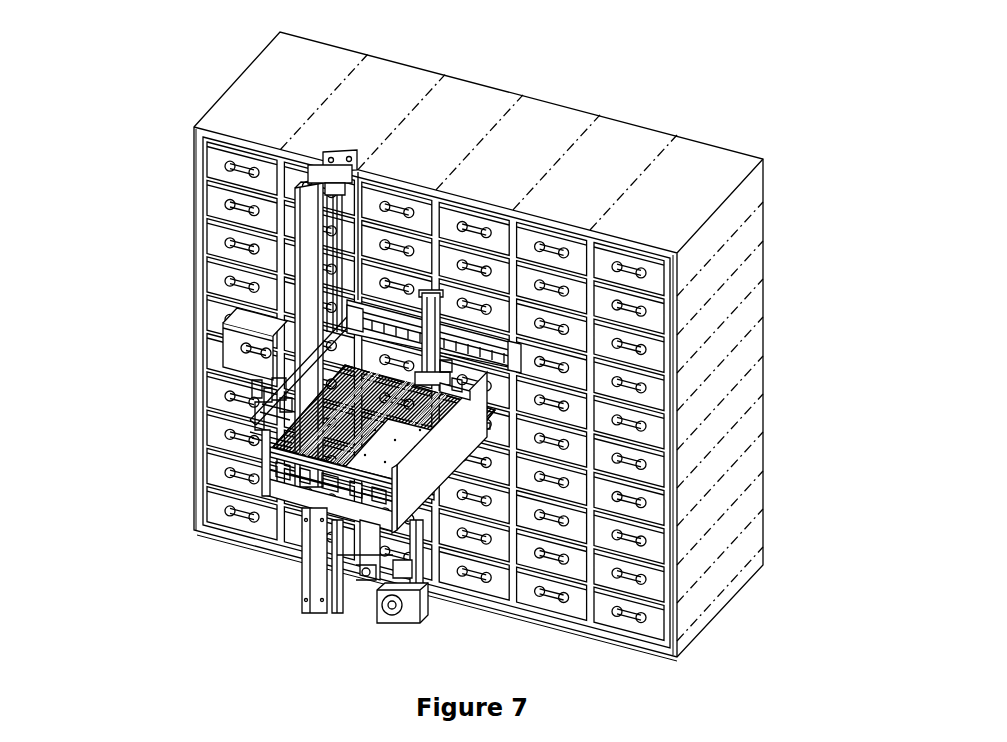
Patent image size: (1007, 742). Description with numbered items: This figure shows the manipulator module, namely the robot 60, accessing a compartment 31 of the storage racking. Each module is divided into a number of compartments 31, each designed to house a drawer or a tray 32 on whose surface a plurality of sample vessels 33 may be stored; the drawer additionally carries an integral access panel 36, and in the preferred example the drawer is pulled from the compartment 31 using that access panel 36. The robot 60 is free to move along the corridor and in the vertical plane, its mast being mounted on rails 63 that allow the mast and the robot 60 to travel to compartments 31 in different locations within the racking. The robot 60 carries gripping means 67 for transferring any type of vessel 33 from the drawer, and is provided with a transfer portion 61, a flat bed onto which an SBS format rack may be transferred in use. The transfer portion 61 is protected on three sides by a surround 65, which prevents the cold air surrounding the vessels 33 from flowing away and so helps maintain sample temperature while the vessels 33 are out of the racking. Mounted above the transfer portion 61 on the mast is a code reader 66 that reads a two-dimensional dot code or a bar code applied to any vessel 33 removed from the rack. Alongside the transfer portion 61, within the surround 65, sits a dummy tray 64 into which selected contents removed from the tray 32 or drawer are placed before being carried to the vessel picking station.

The compartment 31 is at (612, 262).
The tray 32 is at (275, 420).
The sample vessels 33 is at (270, 388).
The access panel 36 is at (247, 342).
The robot 60 is at (282, 541).
The transfer portion 61 is at (268, 432).
The rails 63 is at (365, 570).
The dummy tray 64 is at (275, 473).
The surround 65 is at (477, 390).
The code reader 66 is at (415, 418).
The gripping means 67 is at (443, 366).